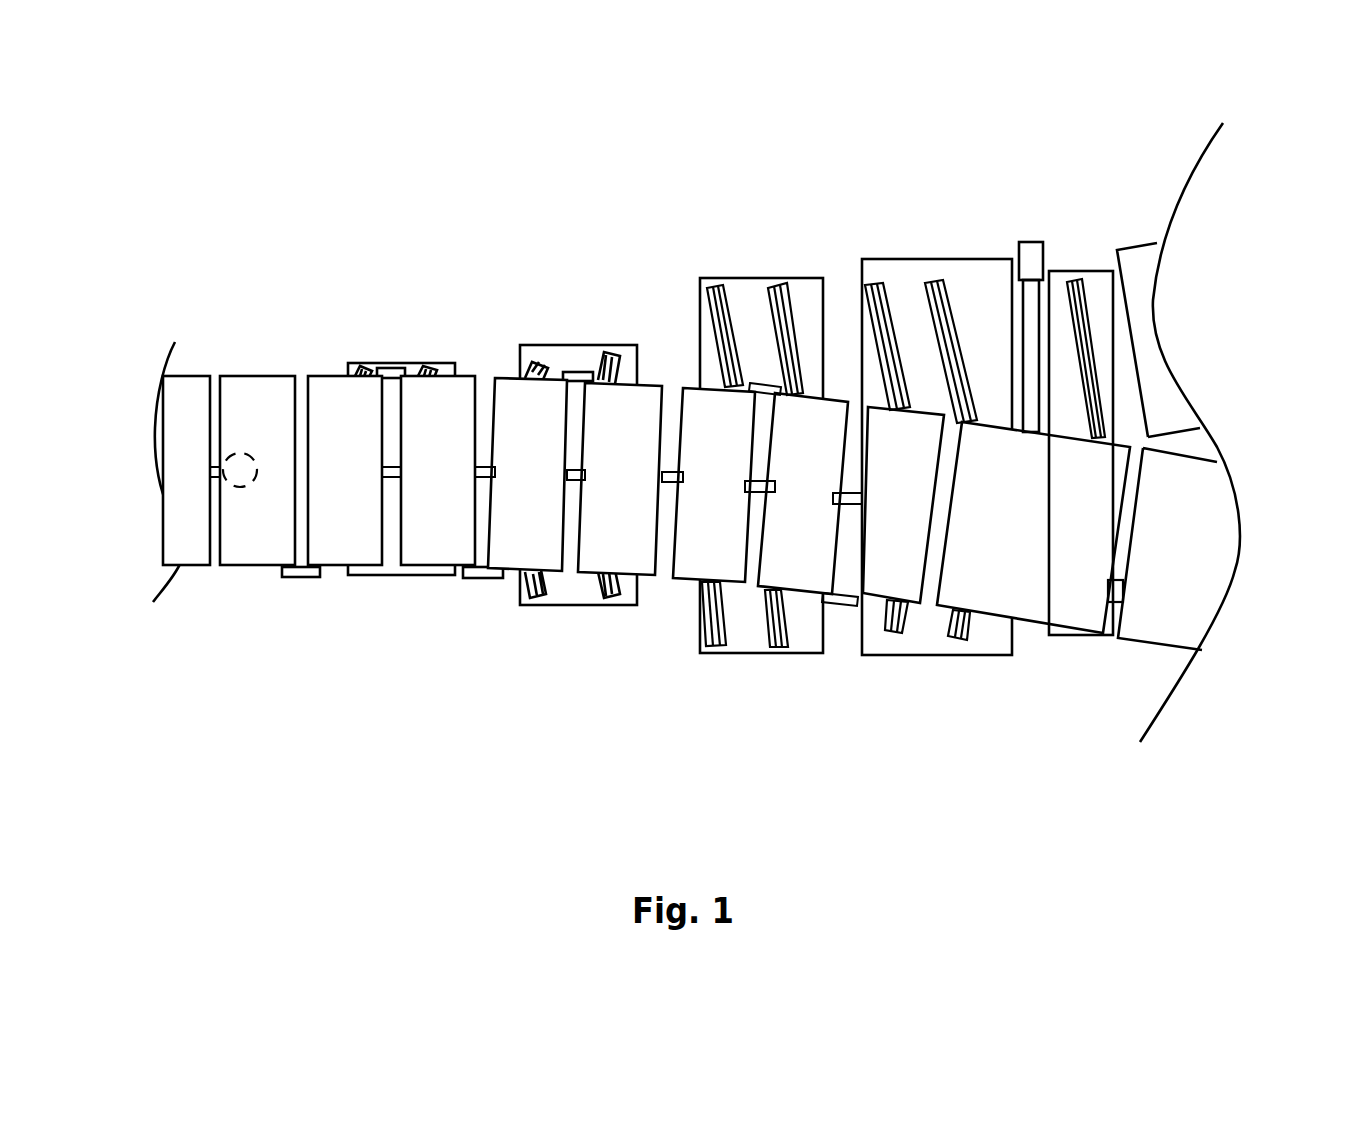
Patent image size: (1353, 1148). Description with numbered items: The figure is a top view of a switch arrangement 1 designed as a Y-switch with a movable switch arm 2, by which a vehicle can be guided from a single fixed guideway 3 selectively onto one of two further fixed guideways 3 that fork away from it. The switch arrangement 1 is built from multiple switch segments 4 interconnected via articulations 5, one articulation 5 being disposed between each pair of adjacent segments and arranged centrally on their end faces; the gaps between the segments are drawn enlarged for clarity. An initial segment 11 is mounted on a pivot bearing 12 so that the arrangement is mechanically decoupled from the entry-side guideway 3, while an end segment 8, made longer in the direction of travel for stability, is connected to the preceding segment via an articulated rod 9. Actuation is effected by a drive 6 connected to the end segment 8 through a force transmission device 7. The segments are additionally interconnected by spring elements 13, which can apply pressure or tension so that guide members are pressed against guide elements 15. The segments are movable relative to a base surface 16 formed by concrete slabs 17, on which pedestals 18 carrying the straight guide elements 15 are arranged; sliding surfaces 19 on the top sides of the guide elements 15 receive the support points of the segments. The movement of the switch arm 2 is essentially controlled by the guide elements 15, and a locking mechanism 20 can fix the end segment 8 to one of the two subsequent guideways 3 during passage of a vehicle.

The switch arrangement 1 is at (340, 145).
The switch arm 2 is at (480, 357).
The fixed guideway 3 is at (700, 432).
The switch segment 4 is at (388, 569).
The articulation 5 is at (536, 584).
The drive 6 is at (1030, 183).
The force transmission device 7 is at (1089, 267).
The end segment 8 is at (1033, 642).
The articulated rod 9 is at (937, 563).
The initial segment 11 is at (224, 467).
The pivot bearing 12 is at (224, 353).
The spring element 13 is at (427, 490).
The guide element 15 is at (727, 270).
The base surface 16 is at (832, 248).
The concrete slab 17 is at (754, 364).
The pedestal 18 is at (707, 322).
The sliding surface 19 is at (839, 432).
The locking mechanism 20 is at (1113, 606).